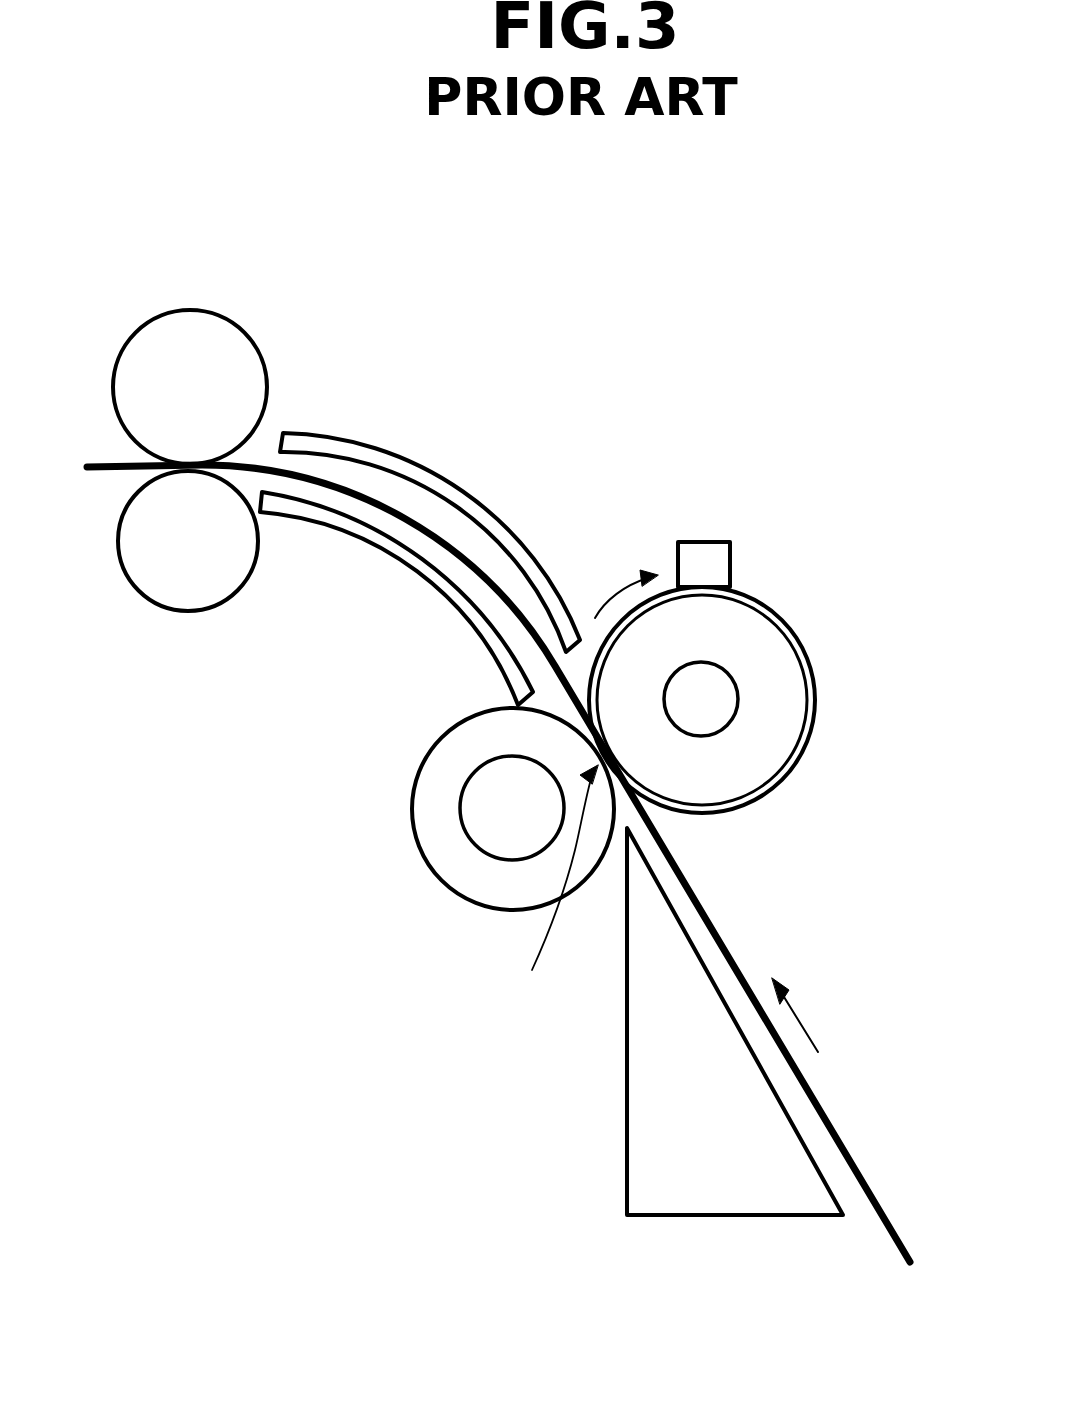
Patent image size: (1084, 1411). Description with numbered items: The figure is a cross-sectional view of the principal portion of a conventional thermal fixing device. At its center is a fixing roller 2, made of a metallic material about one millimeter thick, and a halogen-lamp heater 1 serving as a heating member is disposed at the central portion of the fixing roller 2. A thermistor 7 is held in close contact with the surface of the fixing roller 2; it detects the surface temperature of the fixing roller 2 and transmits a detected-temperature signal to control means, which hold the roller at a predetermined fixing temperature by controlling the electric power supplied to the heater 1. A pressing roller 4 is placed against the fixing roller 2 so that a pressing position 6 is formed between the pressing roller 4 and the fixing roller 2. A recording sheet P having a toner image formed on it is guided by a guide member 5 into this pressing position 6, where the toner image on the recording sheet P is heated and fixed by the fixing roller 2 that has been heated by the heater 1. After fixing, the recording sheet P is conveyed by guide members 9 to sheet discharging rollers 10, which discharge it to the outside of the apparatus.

The halogen-lamp heater 1 is at (720, 705).
The fixing roller 2 is at (773, 618).
The pressing roller 4 is at (452, 860).
The guide member 5 is at (745, 1193).
The pressing position 6 is at (555, 890).
The thermistor 7 is at (713, 541).
The guide members 9 is at (438, 583).
The sheet discharging rollers 10 is at (215, 517).
The recording sheet P is at (865, 1177).